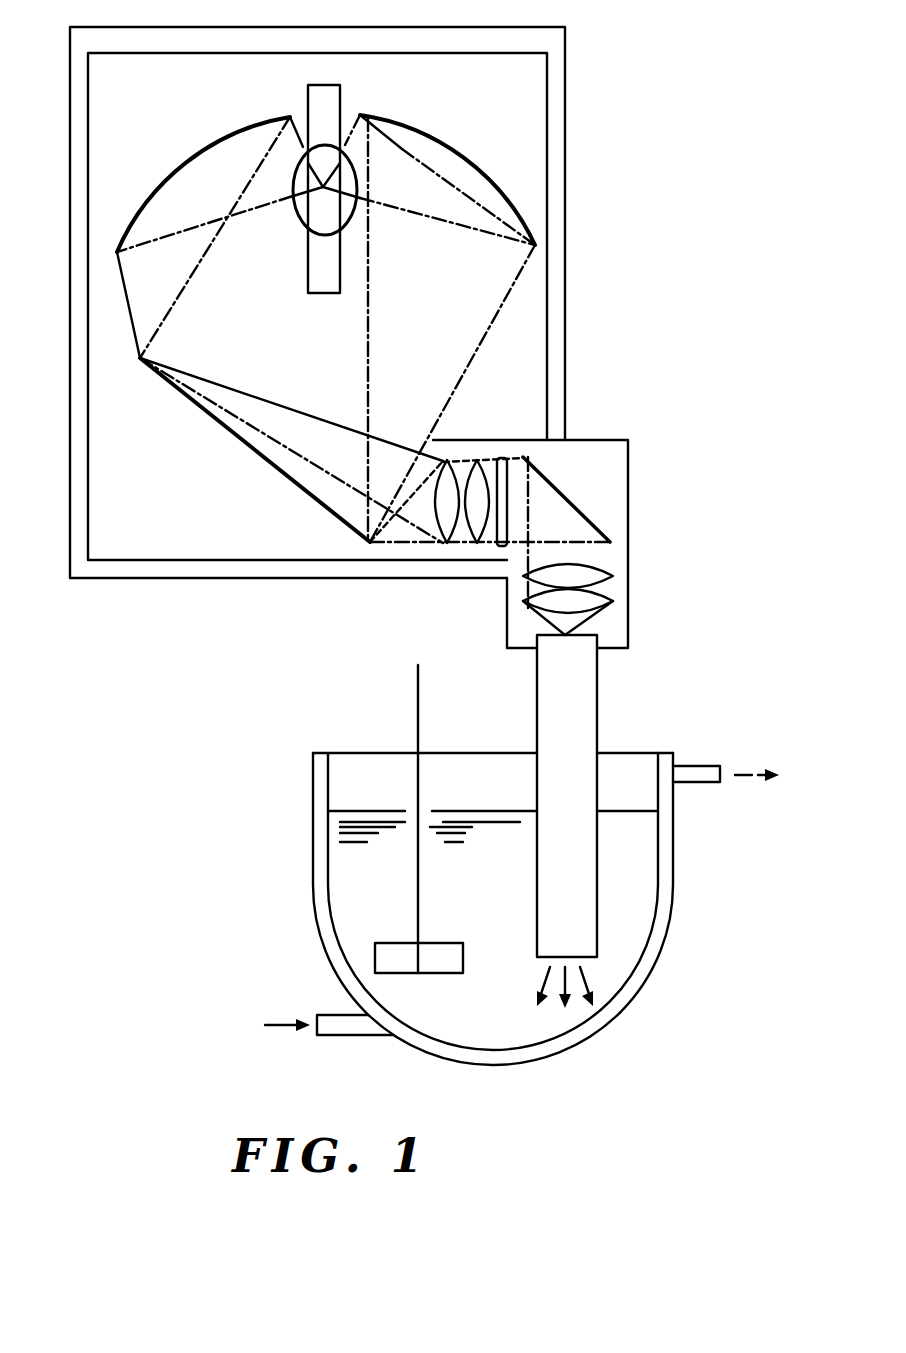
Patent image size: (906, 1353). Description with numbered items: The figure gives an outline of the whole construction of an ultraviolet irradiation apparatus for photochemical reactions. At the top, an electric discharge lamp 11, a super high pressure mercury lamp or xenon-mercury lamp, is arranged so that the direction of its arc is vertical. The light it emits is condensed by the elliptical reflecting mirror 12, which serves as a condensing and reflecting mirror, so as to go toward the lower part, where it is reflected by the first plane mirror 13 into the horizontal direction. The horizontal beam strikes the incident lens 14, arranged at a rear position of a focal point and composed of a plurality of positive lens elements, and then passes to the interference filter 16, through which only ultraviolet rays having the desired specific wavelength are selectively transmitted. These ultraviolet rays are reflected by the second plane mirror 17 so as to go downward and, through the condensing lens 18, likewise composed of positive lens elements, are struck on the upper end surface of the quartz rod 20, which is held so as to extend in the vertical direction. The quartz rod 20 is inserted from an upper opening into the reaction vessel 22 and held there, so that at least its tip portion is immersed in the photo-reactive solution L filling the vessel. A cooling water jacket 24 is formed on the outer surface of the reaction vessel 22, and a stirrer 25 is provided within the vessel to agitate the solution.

The electric discharge lamp 11 is at (343, 103).
The elliptical reflecting mirror 12 is at (467, 155).
The first plane mirror 13 is at (245, 448).
The incident lens 14 is at (462, 548).
The interference filter 16 is at (503, 457).
The second plane mirror 17 is at (566, 497).
The condensing lens 18 is at (613, 587).
The quartz rod 20 is at (597, 883).
The reaction vessel 22 is at (325, 794).
The cooling water jacket 24 is at (630, 1000).
The stirrer 25 is at (440, 975).
The photo-reactive solution L is at (345, 922).